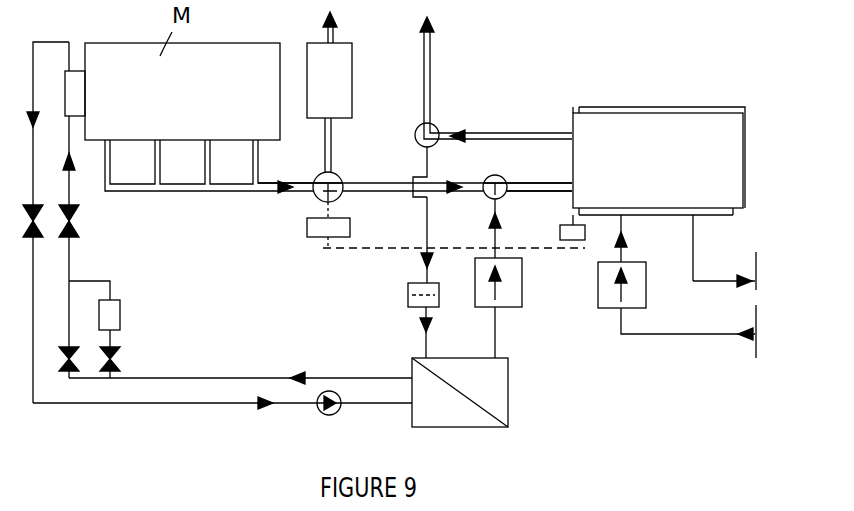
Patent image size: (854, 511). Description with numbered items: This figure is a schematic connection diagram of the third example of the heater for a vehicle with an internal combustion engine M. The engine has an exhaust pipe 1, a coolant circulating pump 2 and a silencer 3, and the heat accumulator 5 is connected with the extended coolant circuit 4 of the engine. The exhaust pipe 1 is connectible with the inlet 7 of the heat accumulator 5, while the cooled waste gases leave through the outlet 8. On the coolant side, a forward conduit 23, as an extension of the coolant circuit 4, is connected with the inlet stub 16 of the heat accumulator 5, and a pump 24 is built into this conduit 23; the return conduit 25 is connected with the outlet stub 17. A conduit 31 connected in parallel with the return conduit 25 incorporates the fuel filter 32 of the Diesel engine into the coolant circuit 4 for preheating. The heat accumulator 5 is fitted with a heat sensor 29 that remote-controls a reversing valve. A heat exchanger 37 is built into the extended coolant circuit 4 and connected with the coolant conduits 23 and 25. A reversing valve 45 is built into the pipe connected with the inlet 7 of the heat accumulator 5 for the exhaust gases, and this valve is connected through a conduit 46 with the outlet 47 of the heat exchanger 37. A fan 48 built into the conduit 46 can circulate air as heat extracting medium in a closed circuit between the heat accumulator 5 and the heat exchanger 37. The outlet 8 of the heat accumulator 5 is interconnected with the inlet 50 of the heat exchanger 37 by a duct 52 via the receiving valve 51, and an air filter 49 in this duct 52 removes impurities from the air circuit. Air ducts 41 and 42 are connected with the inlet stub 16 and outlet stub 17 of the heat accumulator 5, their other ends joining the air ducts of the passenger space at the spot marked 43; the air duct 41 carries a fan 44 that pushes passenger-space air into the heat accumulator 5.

The exhaust pipe 1 is at (263, 182).
The coolant circulating pump 2 is at (75, 89).
The silencer 3 is at (329, 92).
The extended coolant circuit 4 is at (50, 42).
The heat accumulator 5 is at (659, 161).
The inlet 7 is at (571, 178).
The outlet 8 is at (320, 198).
The inlet stub 16 is at (623, 220).
The outlet stub 17 is at (695, 220).
The forward conduit 23 is at (212, 405).
The pump 24 is at (322, 418).
The return conduit 25 is at (195, 378).
The heat sensor 29 is at (560, 232).
The conduit 31 is at (95, 281).
The fuel filter 32 is at (112, 313).
The heat exchanger 37 is at (508, 408).
The air duct 41 is at (693, 336).
The air duct 42 is at (700, 283).
The connection spot 43 is at (758, 325).
The fan 44 is at (638, 305).
The reversing valve 45 is at (488, 178).
The conduit 46 is at (497, 332).
The outlet 47 is at (503, 353).
The fan 48 is at (522, 295).
The air filter 49 is at (408, 297).
The inlet 50 is at (422, 355).
The receiving valve 51 is at (433, 127).
The duct 52 is at (425, 243).